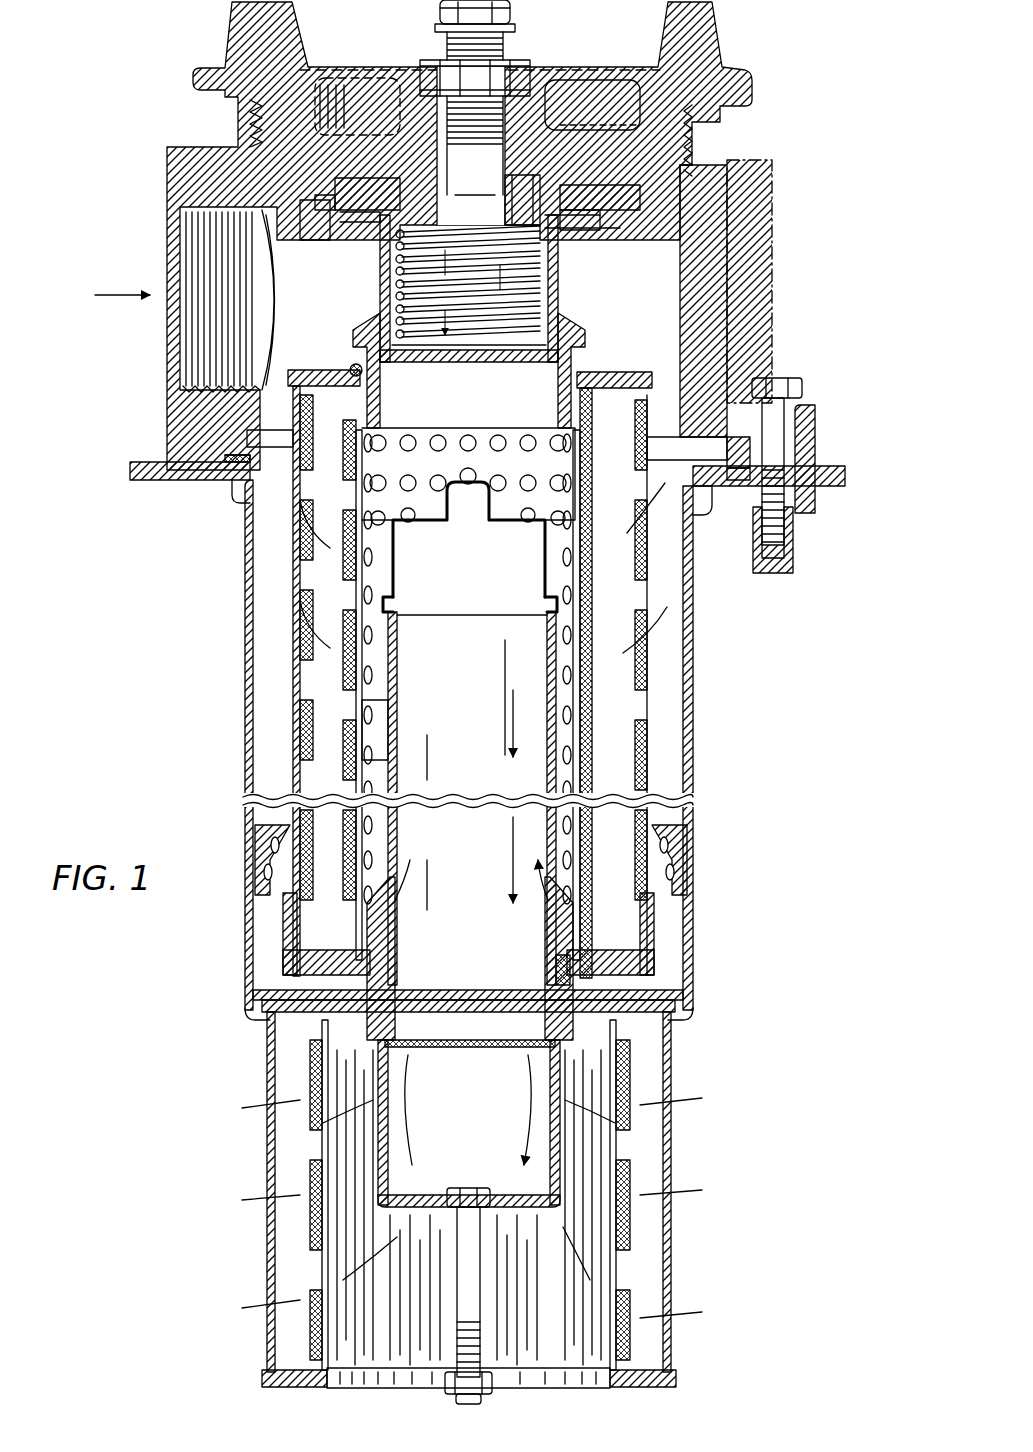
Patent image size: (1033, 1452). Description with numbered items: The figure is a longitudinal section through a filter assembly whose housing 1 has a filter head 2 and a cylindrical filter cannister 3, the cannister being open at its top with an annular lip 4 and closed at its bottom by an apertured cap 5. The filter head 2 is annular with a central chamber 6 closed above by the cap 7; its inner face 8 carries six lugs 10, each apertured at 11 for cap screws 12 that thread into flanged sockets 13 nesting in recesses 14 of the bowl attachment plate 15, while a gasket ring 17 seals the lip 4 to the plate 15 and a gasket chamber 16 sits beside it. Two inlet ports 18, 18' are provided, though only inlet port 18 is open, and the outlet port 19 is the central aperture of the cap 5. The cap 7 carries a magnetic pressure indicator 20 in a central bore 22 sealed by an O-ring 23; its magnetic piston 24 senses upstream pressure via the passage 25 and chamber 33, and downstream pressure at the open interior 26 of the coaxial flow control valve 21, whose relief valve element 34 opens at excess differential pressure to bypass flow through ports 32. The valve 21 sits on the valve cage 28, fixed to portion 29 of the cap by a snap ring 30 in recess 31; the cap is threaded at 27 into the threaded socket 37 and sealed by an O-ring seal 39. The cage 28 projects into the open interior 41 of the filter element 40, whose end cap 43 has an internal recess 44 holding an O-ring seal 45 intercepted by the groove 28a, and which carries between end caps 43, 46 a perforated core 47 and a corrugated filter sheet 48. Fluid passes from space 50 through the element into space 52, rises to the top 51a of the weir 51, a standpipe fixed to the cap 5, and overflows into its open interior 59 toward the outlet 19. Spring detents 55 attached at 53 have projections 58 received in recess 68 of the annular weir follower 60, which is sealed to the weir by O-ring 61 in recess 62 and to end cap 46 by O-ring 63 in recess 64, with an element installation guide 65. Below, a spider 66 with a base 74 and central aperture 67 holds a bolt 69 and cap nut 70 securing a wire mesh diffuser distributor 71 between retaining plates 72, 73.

The housing 1 is at (790, 272).
The filter head 2 is at (740, 250).
The filter cannister 3 is at (694, 758).
The annular flange or lip 4 is at (700, 505).
The apertured cap 5 is at (672, 1005).
The central chamber 6 is at (300, 309).
The cap 7 is at (705, 50).
The inner face 8 is at (790, 468).
The lateral lugs or projections 10 is at (815, 425).
The aperture 11 is at (800, 418).
The cap screws 12 is at (775, 386).
The flanged sockets 13 is at (793, 540).
The recesses 14 is at (740, 488).
The bowl attachment plate 15 is at (165, 485).
The gasket chamber 16 is at (260, 489).
The gasket ring 17 is at (226, 482).
The inlet port 18 is at (185, 301).
The inlet port 18' is at (780, 281).
The outlet port 19 is at (462, 1048).
The magnetic pressure indicator 20 is at (520, 33).
The coaxial bidirectional flow control valve 21 is at (568, 293).
The central bore 22 is at (592, 105).
The O-ring 23 is at (545, 85).
The magnetic piston 24 is at (420, 130).
The passage 25 is at (357, 106).
The open interior 26 is at (503, 212).
The external thread 27 is at (690, 120).
The valve cage 28 is at (383, 290).
The peripheral circumferential groove 28a is at (575, 398).
The portion 29 is at (632, 212).
The snap ring 30 is at (345, 214).
The recess 31 is at (303, 202).
The ports 32 is at (590, 210).
The chamber 33 is at (392, 186).
The relief valve element 34 is at (578, 178).
The threaded socket 37 is at (252, 128).
The O-ring seal 39 is at (690, 168).
The filter element 40 is at (652, 682).
The open interior 41 is at (444, 557).
The end cap 43 is at (628, 382).
The internal recess 44 is at (356, 372).
The O-ring seal 45 is at (360, 366).
The end cap 46 is at (665, 960).
The perforated core 47 is at (355, 632).
The corrugated microporous multilayer filter sheet 48 is at (298, 672).
The space 50 is at (670, 640).
The weir 51 is at (400, 670).
The top of the weir 51a is at (452, 625).
The space 52 is at (390, 728).
The attachment location 53 is at (545, 680).
The spring detents 55 is at (548, 535).
The outward projection 58 is at (548, 606).
The open interior 59 is at (448, 772).
The annular weir follower 60 is at (377, 880).
The O-ring 61 is at (555, 962).
The recess 62 is at (548, 1040).
The O-ring 63 is at (385, 968).
The recess 64 is at (282, 972).
The element installation guide 65 is at (672, 878).
The spider 66 is at (572, 1160).
The central aperture 67 is at (455, 1215).
The recess 68 is at (550, 928).
The bolt 69 is at (460, 1340).
The cap nut 70 is at (495, 1385).
The fluid diffuser distributor 71 is at (265, 1255).
The retaining plate 72 is at (680, 1385).
The retaining plate 73 is at (330, 1035).
The base 74 is at (512, 1215).